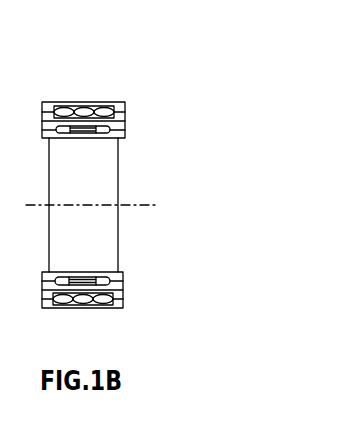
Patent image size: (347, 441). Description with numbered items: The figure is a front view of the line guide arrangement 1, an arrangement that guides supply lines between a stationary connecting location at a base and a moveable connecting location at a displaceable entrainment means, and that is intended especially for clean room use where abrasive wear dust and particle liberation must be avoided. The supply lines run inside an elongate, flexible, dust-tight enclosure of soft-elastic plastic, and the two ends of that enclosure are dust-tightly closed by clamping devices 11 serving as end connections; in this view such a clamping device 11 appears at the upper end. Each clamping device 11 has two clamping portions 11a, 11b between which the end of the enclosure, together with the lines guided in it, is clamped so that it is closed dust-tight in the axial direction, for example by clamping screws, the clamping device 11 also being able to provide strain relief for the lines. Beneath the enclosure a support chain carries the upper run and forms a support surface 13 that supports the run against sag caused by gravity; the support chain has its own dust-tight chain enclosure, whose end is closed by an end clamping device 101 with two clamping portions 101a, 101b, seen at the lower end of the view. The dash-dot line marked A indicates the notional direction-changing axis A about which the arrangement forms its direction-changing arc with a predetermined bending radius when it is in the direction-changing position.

The line guide arrangement 1 is at (4, 77).
The clamping device 11 is at (125, 123).
The clamping portion 11a is at (122, 298).
The clamping portion 11b is at (122, 293).
The support surface 13 is at (41, 127).
The end clamping device 101 is at (120, 276).
The clamping portion 101a is at (124, 136).
The clamping portion 101b is at (127, 125).
The direction-changing axis A is at (31, 208).